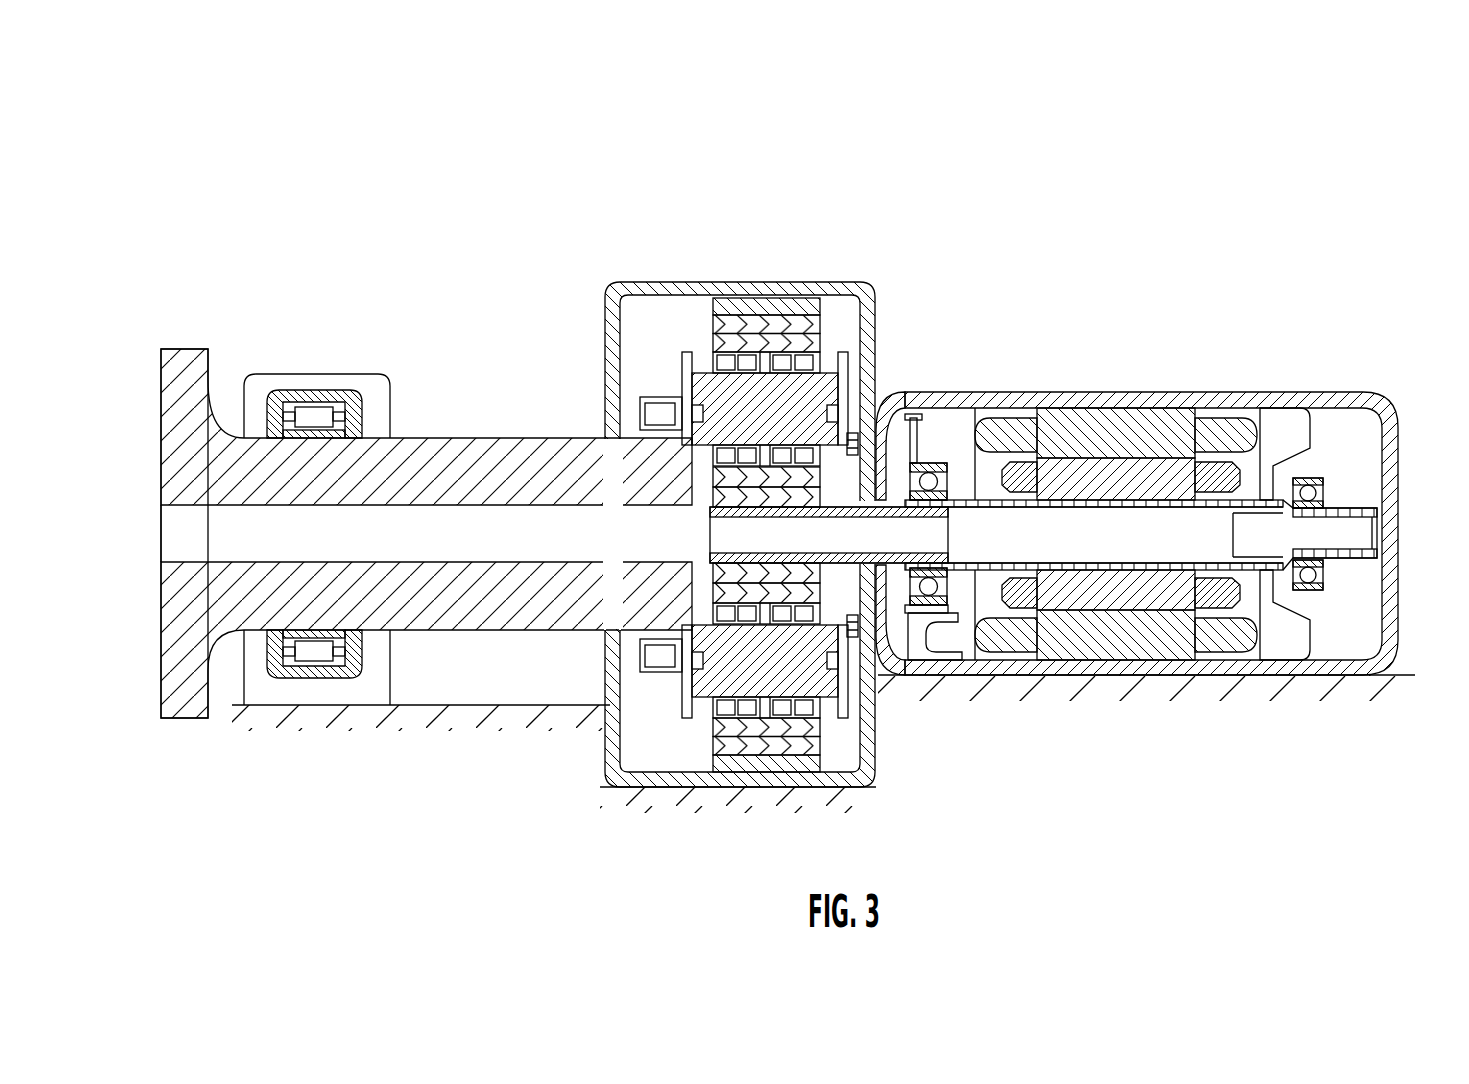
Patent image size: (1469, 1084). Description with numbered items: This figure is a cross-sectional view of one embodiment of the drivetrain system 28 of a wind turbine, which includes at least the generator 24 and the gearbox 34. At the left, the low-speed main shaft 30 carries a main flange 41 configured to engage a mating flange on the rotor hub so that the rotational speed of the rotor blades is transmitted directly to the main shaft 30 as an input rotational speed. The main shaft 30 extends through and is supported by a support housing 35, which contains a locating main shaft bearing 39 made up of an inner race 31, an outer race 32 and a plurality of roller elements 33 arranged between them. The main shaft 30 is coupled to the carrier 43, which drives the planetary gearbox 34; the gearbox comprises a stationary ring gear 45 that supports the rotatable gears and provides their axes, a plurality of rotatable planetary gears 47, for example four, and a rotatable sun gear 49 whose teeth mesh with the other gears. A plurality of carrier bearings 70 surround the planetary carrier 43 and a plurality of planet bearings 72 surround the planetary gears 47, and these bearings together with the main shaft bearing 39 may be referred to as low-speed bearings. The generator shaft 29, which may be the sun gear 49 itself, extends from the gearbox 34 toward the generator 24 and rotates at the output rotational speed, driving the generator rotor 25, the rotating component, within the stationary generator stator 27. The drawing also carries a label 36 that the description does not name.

The drivetrain system 28 is at (467, 152).
The generator 24 is at (1252, 381).
The generator rotor 25 is at (1140, 462).
The generator stator 27 is at (1185, 430).
The generator shaft 29 is at (1125, 538).
The main shaft 30 is at (463, 436).
The inner race 31 is at (334, 430).
The outer race 32 is at (330, 410).
The roller elements 33 is at (322, 417).
The gearbox 34 is at (718, 279).
The support housing 35 is at (398, 648).
The mounting surface 36 is at (1410, 680).
The main shaft bearing 39 is at (264, 415).
The main flange 41 is at (165, 385).
The carrier 43 is at (680, 372).
The stationary ring gear 45 is at (776, 324).
The planetary gears 47 is at (818, 478).
The sun gear 49 is at (818, 470).
The carrier bearings 70 is at (634, 402).
The planet bearings 72 is at (720, 358).